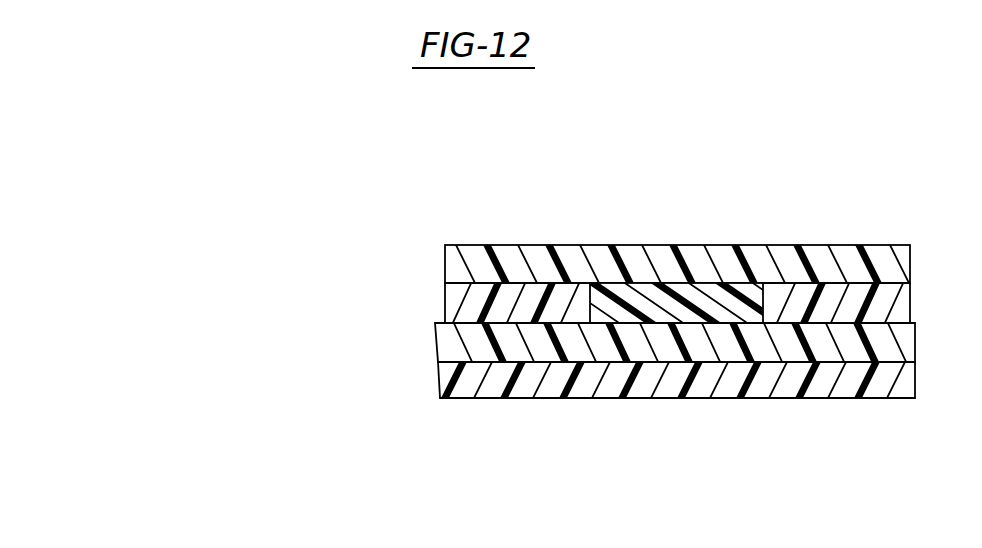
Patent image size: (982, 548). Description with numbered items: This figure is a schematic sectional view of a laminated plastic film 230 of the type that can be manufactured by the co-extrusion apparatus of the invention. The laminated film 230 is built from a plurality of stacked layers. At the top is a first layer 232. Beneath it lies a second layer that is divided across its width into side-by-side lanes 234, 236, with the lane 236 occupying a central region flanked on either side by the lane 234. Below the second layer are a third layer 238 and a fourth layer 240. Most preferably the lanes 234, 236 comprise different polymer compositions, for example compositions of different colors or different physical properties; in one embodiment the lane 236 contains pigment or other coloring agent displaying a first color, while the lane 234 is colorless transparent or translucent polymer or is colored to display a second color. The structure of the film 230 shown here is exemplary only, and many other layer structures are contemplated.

The laminated plastic film 230 is at (637, 321).
The first layer 232 is at (747, 253).
The lane of second layer 234 is at (445, 303).
The lane of second layer 236 is at (656, 300).
The third layer 238 is at (540, 350).
The fourth layer 240 is at (778, 388).